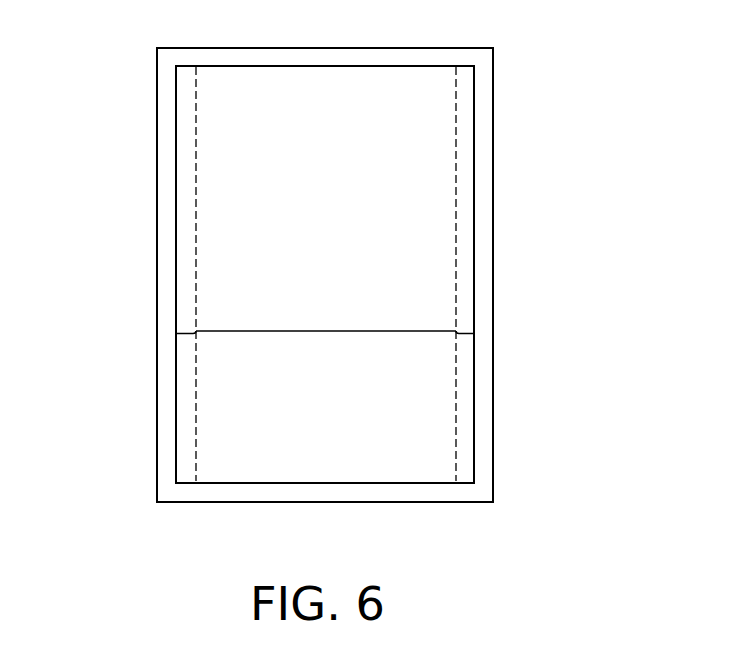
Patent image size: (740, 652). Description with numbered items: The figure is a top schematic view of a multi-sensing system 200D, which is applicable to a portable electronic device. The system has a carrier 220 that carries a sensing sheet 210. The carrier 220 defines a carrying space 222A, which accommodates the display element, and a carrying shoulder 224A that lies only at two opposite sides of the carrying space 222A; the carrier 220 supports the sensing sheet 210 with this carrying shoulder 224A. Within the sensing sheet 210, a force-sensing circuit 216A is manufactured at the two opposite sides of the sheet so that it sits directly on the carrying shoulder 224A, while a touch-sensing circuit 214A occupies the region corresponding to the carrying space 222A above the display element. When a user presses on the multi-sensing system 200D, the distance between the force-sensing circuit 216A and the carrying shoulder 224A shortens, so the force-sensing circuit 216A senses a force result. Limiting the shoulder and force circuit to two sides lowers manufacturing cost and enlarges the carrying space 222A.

The multi-sensing system 200D is at (617, 557).
The sensing sheet 210 is at (218, 379).
The touch-sensing circuit 214A is at (332, 331).
The force-sensing circuit 216A is at (186, 333).
The carrier 220 is at (168, 431).
The carrying space 222A is at (265, 129).
The carrying shoulder 224A is at (196, 216).